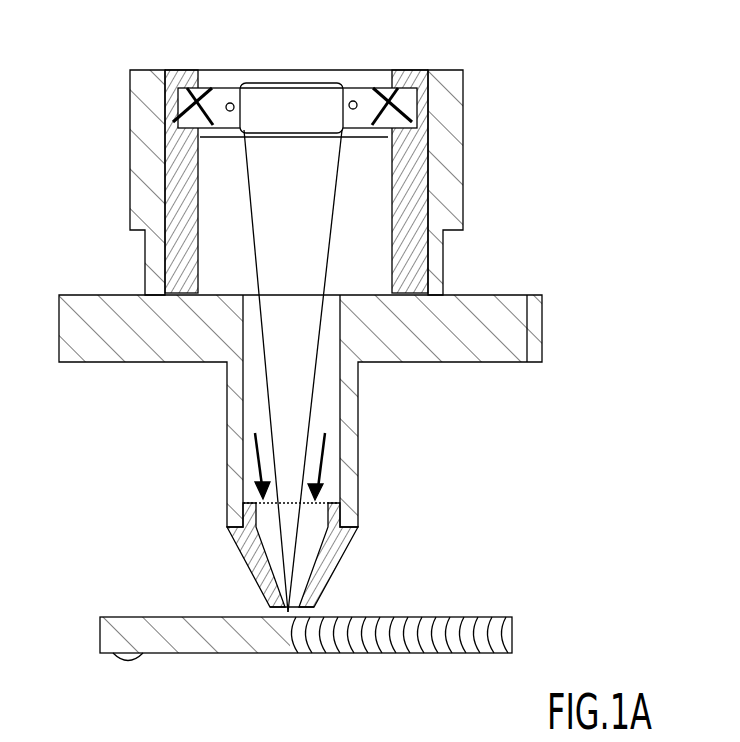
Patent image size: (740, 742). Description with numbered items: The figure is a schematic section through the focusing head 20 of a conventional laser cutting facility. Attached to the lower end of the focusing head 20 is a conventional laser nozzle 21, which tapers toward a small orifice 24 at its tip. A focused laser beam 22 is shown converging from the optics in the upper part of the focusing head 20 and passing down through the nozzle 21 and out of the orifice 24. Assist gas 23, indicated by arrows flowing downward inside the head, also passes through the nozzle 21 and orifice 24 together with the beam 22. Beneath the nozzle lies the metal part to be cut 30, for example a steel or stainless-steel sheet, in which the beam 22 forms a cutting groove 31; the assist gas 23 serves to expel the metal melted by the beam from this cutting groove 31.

The focusing head 20 is at (358, 435).
The laser nozzle 21 is at (340, 562).
The laser beam 22 is at (308, 258).
The assist gas 23 is at (233, 466).
The orifice 24 is at (270, 610).
The metal part to be cut 30 is at (158, 633).
The cutting groove 31 is at (323, 637).